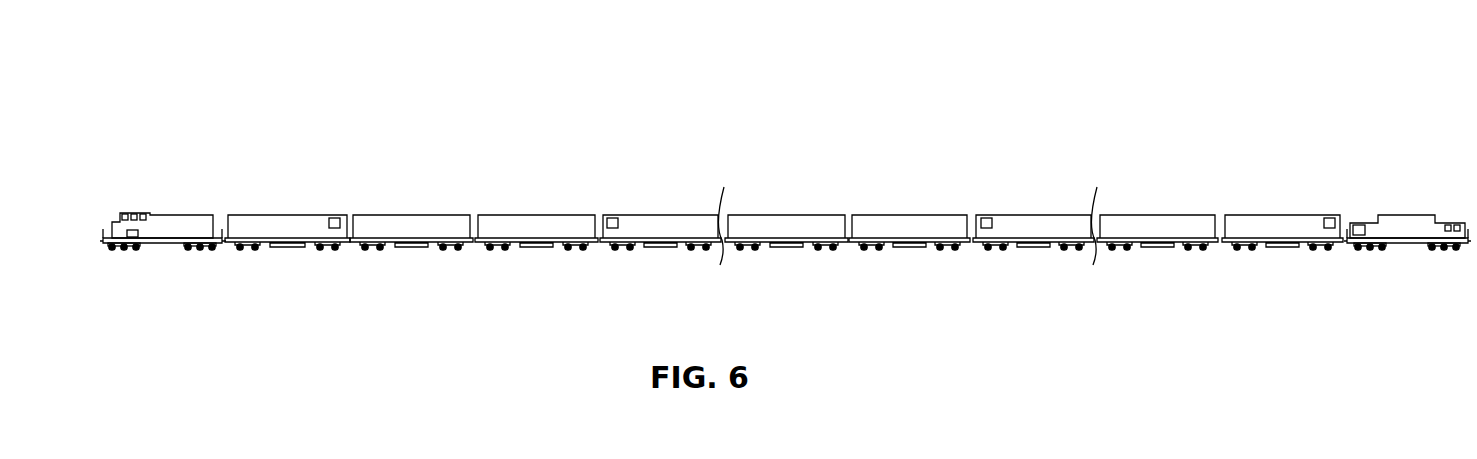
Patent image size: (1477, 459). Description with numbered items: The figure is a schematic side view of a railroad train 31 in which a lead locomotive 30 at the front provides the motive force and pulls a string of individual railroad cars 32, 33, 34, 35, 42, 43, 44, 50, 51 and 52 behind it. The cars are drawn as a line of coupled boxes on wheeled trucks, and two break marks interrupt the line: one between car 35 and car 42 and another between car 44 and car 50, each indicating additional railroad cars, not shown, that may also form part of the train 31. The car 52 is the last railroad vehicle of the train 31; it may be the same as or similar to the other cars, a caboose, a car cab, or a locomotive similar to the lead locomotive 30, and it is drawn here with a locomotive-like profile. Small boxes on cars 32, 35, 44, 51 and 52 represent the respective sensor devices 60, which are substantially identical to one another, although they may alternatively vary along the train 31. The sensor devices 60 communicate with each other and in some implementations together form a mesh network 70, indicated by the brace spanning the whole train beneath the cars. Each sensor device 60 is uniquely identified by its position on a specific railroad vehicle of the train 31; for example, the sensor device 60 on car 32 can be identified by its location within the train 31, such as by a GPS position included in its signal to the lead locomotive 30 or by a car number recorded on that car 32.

The train 31 is at (218, 87).
The lead locomotive 30 is at (177, 213).
The railroad car 32 is at (285, 213).
The railroad car 33 is at (408, 213).
The railroad car 34 is at (533, 213).
The railroad car 35 is at (657, 213).
The railroad car 42 is at (781, 213).
The railroad car 43 is at (908, 213).
The railroad car 44 is at (1031, 213).
The railroad car 50 is at (1155, 213).
The railroad car 51 is at (1280, 213).
The last railroad car 52 is at (1426, 214).
The sensor device 60 is at (331, 217).
The mesh network 70 is at (1466, 269).